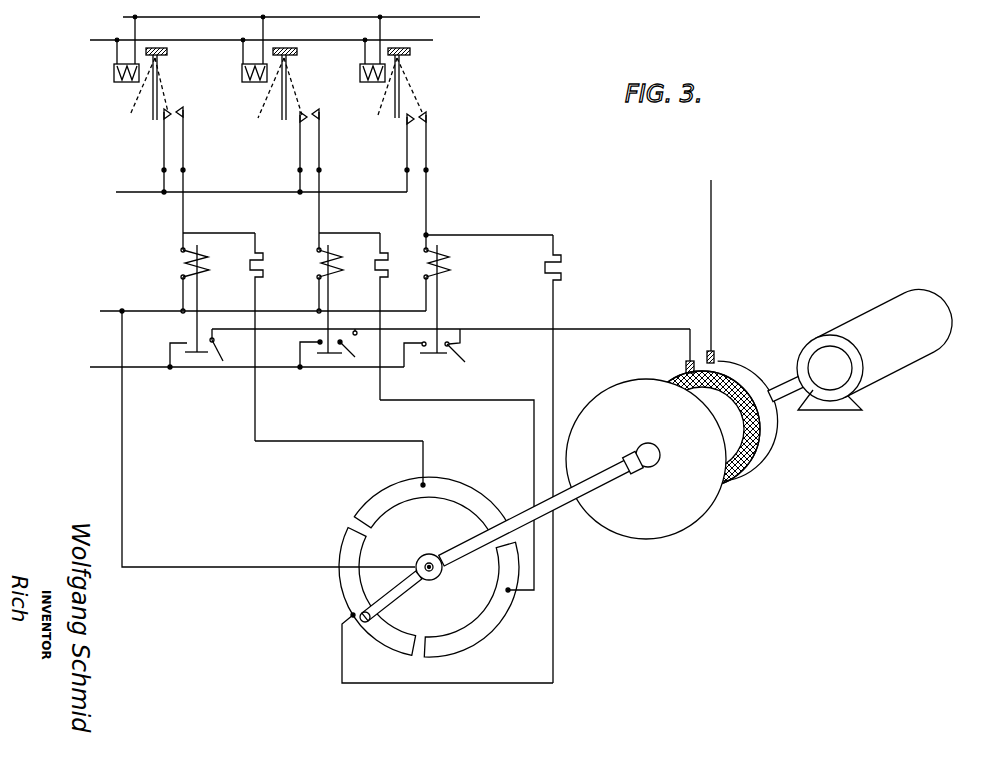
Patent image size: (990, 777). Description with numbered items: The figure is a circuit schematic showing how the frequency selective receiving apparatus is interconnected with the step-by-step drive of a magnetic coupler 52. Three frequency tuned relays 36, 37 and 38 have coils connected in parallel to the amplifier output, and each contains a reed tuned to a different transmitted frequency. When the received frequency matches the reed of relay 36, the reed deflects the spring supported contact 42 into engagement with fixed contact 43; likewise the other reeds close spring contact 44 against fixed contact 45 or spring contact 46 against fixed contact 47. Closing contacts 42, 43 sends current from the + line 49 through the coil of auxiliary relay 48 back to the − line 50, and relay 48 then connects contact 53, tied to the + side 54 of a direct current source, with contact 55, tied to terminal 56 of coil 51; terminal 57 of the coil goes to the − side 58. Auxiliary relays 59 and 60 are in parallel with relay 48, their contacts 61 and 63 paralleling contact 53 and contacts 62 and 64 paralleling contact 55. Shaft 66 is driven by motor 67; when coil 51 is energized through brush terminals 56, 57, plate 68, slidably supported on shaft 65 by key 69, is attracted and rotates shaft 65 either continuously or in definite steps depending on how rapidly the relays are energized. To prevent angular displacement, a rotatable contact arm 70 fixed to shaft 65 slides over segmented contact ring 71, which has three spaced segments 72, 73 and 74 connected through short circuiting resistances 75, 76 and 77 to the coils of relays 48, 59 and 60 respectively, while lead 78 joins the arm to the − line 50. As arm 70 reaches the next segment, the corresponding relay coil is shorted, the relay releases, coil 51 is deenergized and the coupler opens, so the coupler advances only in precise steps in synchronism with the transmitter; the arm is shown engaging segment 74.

The frequency tuned relay 36 is at (142, 70).
The frequency tuned relay 37 is at (273, 72).
The frequency tuned relay 38 is at (389, 72).
The spring supported contact 42 is at (163, 142).
The fixed contact 43 is at (185, 142).
The spring contact 44 is at (299, 150).
The fixed contact 45 is at (321, 150).
The spring contact 46 is at (407, 150).
The fixed contact 47 is at (428, 146).
The auxiliary relay 48 is at (199, 253).
The + line 49 is at (140, 196).
The − line 50 is at (134, 308).
The coil of magnetic coupler 51 is at (780, 428).
The magnetic coupler 52 is at (723, 433).
The contact 53 is at (187, 342).
The + side of direct current potential source 54 is at (134, 370).
The contact 55 is at (450, 347).
The brush terminal 56 is at (684, 366).
The brush terminal 57 is at (716, 356).
The − side of source of D. C. potential 58 is at (713, 214).
The auxiliary relay 59 is at (332, 256).
The auxiliary relay 60 is at (449, 268).
The contact 61 is at (319, 344).
The contact 62 is at (358, 349).
The contact 63 is at (423, 347).
The contact 64 is at (463, 358).
The shaft 65 is at (568, 504).
The shaft 66 is at (791, 383).
The motor 67 is at (903, 312).
The plate 68 is at (700, 497).
The key 69 is at (648, 462).
The rotatable contact arm 70 is at (395, 594).
The segmented contact ring 71 is at (411, 558).
The segment 72 is at (400, 492).
The segment 73 is at (485, 628).
The segment 74 is at (353, 583).
The short circuiting resistance 75 is at (248, 270).
The short circuiting resistance 76 is at (370, 270).
The short circuiting resistance 77 is at (563, 270).
The lead 78 is at (210, 562).